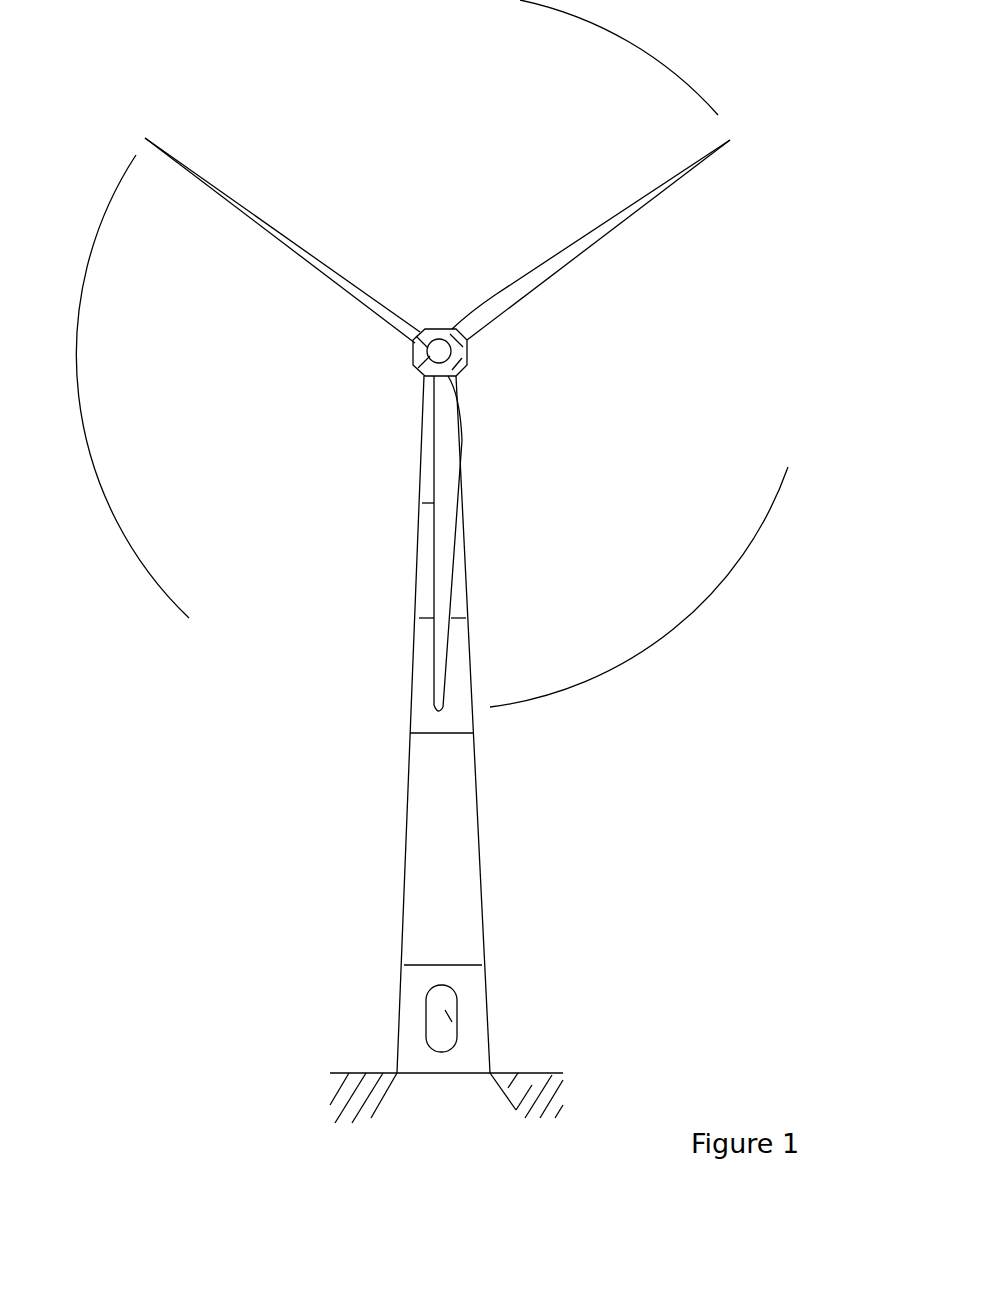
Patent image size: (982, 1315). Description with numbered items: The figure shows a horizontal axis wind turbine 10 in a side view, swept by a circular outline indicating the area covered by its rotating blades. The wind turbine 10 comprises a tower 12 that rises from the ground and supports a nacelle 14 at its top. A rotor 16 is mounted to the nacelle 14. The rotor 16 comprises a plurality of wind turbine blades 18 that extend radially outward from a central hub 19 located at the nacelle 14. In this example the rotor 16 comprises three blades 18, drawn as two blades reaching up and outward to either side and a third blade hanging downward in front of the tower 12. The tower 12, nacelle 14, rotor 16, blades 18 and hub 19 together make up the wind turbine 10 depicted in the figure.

The horizontal axis wind turbine 10 is at (214, 748).
The tower 12 is at (493, 911).
The nacelle 14 is at (468, 365).
The rotor 16 is at (668, 269).
The wind turbine blades 18 is at (305, 248).
The central hub 19 is at (441, 354).